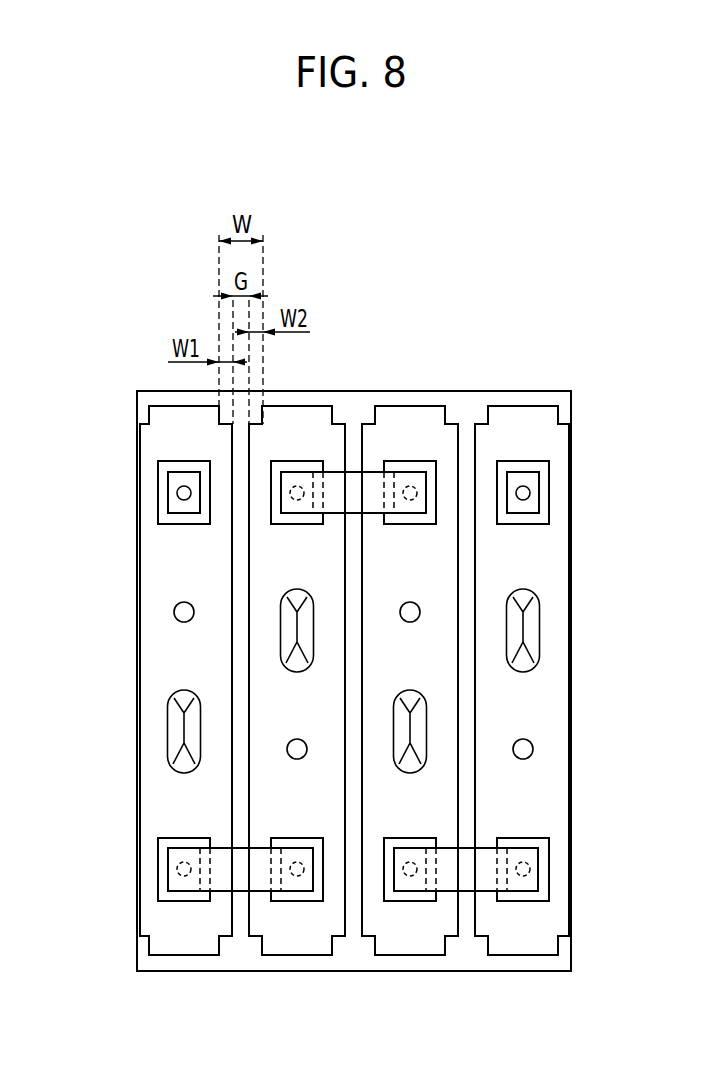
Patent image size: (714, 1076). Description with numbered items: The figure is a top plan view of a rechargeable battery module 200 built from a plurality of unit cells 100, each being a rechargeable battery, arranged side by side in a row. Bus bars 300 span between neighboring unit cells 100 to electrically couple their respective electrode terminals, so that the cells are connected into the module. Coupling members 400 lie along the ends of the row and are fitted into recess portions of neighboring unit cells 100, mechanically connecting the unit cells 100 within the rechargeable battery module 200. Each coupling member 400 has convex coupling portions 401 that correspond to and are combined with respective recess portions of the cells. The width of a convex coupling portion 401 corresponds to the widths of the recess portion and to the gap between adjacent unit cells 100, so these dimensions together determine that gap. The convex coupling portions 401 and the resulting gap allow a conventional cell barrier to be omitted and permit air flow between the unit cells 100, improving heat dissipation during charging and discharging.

The unit cell 100 is at (131, 567).
The rechargeable battery module 200 is at (455, 327).
The bus bar 300 is at (223, 843).
The coupling member 400 is at (517, 391).
The convex coupling portion 401 is at (348, 431).